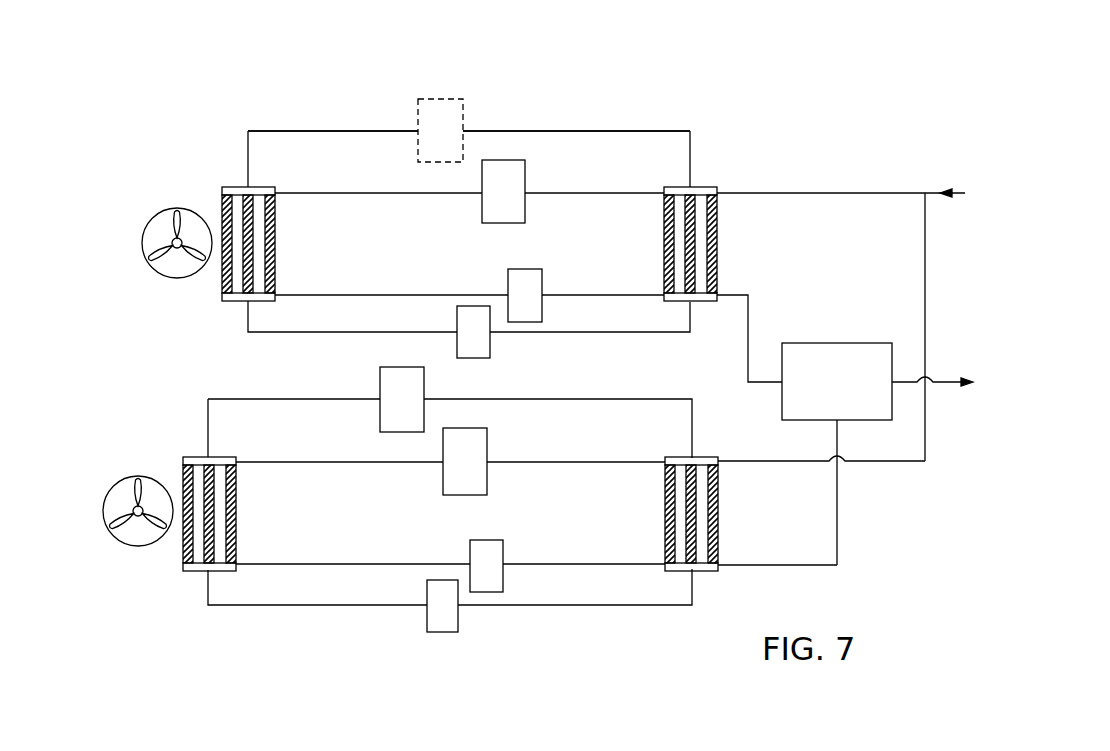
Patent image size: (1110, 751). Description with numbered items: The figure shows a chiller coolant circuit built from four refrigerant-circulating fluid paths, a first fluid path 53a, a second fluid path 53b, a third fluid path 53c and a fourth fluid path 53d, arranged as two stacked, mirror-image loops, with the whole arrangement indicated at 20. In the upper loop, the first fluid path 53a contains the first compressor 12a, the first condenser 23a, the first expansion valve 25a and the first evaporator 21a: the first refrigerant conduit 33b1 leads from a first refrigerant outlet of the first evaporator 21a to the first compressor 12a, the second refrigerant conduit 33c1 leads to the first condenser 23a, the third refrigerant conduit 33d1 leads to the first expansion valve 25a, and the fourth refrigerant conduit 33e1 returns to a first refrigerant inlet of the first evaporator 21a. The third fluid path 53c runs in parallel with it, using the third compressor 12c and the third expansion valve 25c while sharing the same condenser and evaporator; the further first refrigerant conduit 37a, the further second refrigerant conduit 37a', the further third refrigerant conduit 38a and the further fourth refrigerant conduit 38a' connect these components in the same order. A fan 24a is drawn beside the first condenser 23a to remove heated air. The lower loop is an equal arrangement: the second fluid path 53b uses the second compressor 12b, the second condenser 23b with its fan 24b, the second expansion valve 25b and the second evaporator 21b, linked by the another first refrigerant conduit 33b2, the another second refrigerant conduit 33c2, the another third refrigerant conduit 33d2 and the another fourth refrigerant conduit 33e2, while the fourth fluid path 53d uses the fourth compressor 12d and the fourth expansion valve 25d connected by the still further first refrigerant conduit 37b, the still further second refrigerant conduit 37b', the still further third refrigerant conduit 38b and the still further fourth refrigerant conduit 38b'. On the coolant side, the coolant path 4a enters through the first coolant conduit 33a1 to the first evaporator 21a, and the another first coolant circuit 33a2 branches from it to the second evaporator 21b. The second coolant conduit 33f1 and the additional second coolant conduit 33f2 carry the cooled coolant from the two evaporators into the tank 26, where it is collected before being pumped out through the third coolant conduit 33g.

The fuel cell system / cooling arrangement 20 is at (680, 107).
The coolant path 4a is at (887, 172).
The first compressor 12a is at (483, 207).
The second compressor 12b is at (448, 475).
The third compressor 12c is at (432, 98).
The fourth compressor 12d is at (380, 415).
The first evaporator 21a is at (703, 187).
The second evaporator 21b is at (697, 460).
The first condenser 23a is at (225, 190).
The second condenser 23b is at (187, 458).
The first fan 24a is at (153, 212).
The second fan 24b is at (122, 478).
The first expansion valve 25a is at (528, 277).
The second expansion valve 25b is at (488, 543).
The third expansion valve 25c is at (455, 353).
The fourth expansion valve 25d is at (430, 608).
The tank 26 is at (825, 350).
The first coolant conduit 33a1 is at (772, 193).
The another first coolant circuit 33a2 is at (892, 463).
The first refrigerant conduit 33b1 is at (597, 193).
The another first refrigerant conduit 33b2 is at (577, 462).
The second refrigerant conduit 33c1 is at (327, 193).
The another second refrigerant conduit 33c2 is at (293, 462).
The third refrigerant conduit 33d1 is at (317, 295).
The another third refrigerant conduit 33d2 is at (323, 564).
The fourth refrigerant conduit 33e1 is at (588, 295).
The another fourth refrigerant conduit 33e2 is at (560, 564).
The second coolant conduit 33f1 is at (742, 295).
The additional second coolant conduit 33f2 is at (753, 565).
The third coolant conduit 33g is at (942, 382).
The further first refrigerant conduit 37a is at (576, 97).
The further second refrigerant conduit 37a' is at (333, 99).
The still further first refrigerant conduit 37b is at (558, 408).
The still further second refrigerant conduit 37b' is at (294, 410).
The further third refrigerant conduit 38a is at (352, 339).
The further fourth refrigerant conduit 38a' is at (598, 342).
The still further third refrigerant conduit 38b is at (317, 619).
The still further fourth refrigerant conduit 38b' is at (575, 614).
The first fluid path 53a is at (296, 163).
The second fluid path 53b is at (256, 583).
The third fluid path 53c is at (286, 93).
The fourth fluid path 53d is at (234, 371).